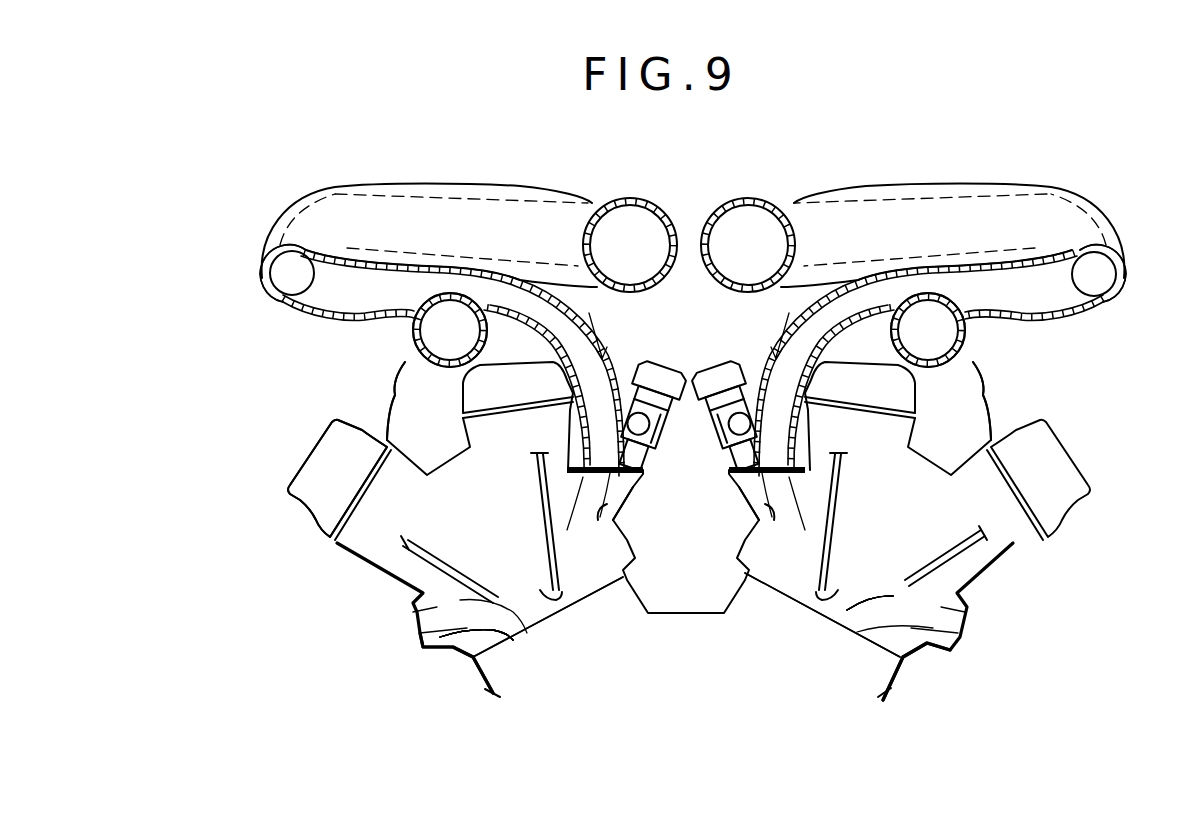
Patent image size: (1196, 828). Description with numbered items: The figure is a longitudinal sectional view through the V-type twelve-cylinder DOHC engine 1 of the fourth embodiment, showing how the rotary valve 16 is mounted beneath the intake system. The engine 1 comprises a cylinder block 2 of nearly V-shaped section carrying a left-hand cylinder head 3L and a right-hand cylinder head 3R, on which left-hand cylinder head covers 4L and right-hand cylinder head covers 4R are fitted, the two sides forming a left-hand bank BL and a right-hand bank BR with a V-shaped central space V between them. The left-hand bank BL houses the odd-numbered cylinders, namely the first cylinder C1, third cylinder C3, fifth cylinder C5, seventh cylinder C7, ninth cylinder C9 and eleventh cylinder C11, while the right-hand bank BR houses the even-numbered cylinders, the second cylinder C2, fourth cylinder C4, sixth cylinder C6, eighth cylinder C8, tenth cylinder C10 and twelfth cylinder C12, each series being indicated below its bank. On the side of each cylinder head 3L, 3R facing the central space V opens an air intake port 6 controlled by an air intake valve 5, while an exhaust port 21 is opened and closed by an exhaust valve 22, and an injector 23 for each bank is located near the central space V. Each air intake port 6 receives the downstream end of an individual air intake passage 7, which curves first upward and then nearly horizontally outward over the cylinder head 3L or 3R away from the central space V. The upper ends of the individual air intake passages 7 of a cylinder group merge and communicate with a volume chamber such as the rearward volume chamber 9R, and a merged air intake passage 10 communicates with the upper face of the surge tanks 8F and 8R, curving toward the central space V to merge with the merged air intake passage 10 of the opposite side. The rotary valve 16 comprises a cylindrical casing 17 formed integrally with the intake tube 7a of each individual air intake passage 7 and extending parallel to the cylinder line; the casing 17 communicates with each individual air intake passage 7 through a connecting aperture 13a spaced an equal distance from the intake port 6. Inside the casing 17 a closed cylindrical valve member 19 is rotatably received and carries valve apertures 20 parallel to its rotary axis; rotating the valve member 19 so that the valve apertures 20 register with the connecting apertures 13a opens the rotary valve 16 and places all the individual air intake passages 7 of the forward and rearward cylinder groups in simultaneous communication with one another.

The V-type twelve-cylinder DOHC engine 1 is at (295, 460).
The cylinder block 2 is at (692, 614).
The left-hand cylinder head 3L is at (337, 545).
The right-hand cylinder head 3R is at (1016, 547).
The left-hand cylinder head covers 4L is at (461, 414).
The right-hand cylinder head covers 4R is at (917, 414).
The air intake valve 5 is at (534, 506).
The air intake port 6 is at (632, 518).
The individual air intake passage 7 is at (598, 334).
The intake tube 7a is at (301, 318).
The front surge tank 8F is at (266, 262).
The rear surge tank 8R is at (1118, 262).
The rearward volume chamber 9R is at (264, 287).
The merged air intake passage 10 is at (378, 183).
The connecting aperture 13a is at (424, 299).
The rotary valve 16 is at (404, 361).
The cylindrical casing 17 is at (488, 335).
The valve member 19 is at (412, 338).
The valve apertures 20 is at (456, 366).
The exhaust port 21 is at (416, 646).
The exhaust valve 22 is at (393, 590).
The injector 23 is at (688, 376).
The V-shaped central space V is at (686, 615).
The left-hand bank BL is at (383, 630).
The right-hand bank BR is at (1022, 628).
The first cylinder C1 is at (527, 662).
The second cylinder C2 is at (843, 665).
The third cylinder C3 is at (476, 635).
The fourth cylinder C4 is at (870, 603).
The fifth cylinder C5 is at (476, 635).
The sixth cylinder C6 is at (870, 603).
The seventh cylinder C7 is at (476, 635).
The eighth cylinder C8 is at (870, 603).
The ninth cylinder C9 is at (476, 635).
The tenth cylinder C10 is at (870, 603).
The eleventh cylinder C11 is at (476, 635).
The twelfth cylinder C12 is at (870, 603).